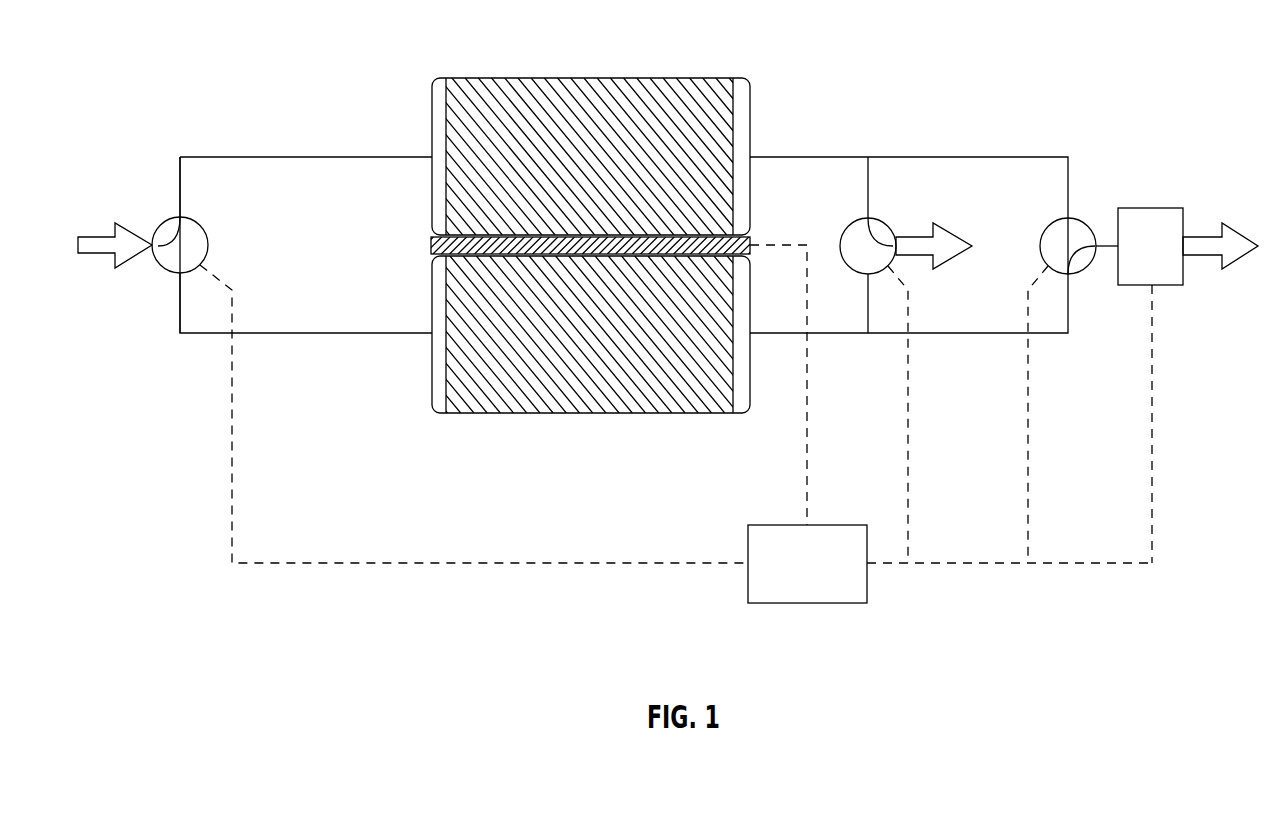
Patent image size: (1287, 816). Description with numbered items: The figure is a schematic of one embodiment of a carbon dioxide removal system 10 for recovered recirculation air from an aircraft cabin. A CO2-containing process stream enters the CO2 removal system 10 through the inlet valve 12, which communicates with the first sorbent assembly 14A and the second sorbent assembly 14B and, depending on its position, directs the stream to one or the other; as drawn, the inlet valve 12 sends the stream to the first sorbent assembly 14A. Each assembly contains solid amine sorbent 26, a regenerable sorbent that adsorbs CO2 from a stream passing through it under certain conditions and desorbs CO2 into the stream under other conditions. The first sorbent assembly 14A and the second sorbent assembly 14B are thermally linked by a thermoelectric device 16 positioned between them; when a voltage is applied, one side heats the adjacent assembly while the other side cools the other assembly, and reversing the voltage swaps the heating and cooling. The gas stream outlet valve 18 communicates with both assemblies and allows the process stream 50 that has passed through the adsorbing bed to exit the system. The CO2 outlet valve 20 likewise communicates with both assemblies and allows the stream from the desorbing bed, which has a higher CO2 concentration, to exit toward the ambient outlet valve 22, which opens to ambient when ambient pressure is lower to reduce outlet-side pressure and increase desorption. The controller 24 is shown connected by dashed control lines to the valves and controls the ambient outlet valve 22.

The carbon dioxide removal system 10 is at (140, 190).
The inlet valve 12 is at (181, 228).
The first sorbent assembly 14A is at (511, 74).
The second sorbent assembly 14B is at (511, 422).
The thermoelectric device 16 is at (430, 245).
The gas stream outlet valve 18 is at (852, 226).
The CO2 outlet valve 20 is at (1050, 226).
The ambient outlet valve 22 is at (1153, 207).
The controller 24 is at (793, 578).
The solid amine sorbent 26 is at (585, 104).
The process stream 50 is at (913, 237).